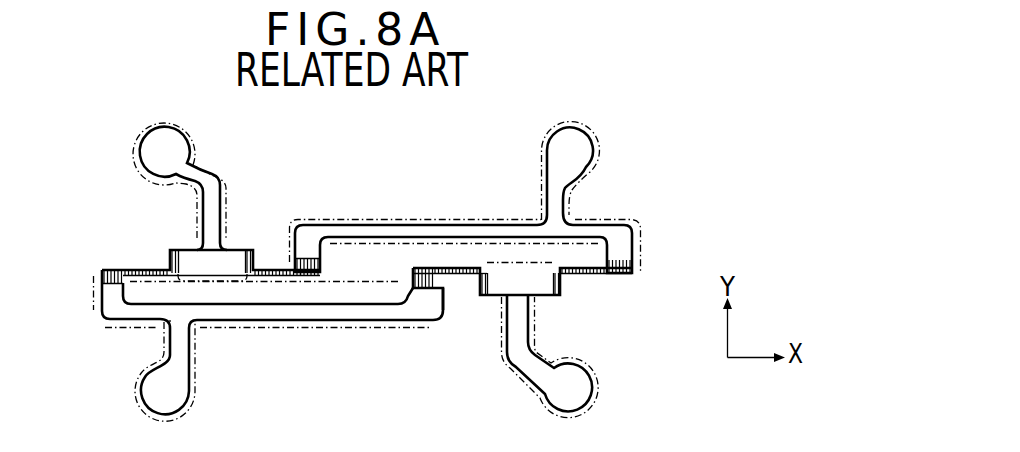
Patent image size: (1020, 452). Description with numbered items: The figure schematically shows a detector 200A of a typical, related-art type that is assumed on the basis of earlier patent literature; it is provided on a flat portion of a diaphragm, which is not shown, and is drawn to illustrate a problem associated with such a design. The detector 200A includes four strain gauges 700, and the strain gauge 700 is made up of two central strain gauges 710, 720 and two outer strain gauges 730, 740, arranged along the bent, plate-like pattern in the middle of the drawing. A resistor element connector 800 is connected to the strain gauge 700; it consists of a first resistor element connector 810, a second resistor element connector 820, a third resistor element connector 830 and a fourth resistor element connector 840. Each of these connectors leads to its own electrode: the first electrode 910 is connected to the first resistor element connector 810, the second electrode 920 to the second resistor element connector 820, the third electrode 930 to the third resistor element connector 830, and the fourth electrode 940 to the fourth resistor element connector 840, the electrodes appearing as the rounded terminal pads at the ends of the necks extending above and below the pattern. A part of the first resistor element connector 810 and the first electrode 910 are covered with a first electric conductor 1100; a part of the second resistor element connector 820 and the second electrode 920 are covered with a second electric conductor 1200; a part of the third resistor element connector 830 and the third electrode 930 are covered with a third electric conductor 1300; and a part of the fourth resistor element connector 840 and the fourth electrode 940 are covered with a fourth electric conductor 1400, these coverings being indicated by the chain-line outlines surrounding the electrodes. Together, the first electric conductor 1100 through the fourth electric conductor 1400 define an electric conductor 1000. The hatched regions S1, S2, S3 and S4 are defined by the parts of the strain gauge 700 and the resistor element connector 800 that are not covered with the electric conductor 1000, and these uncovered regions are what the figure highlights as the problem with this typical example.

The detector 200A is at (455, 170).
The strain gauge 700 is at (247, 234).
The central strain gauge 710 is at (276, 270).
The central strain gauge 720 is at (448, 308).
The outer strain gauge 730 is at (148, 270).
The outer strain gauge 740 is at (570, 285).
The resistor element connector 800 is at (374, 224).
The first resistor element connector 810 is at (210, 258).
The second resistor element connector 820 is at (300, 321).
The third resistor element connector 830 is at (545, 292).
The fourth resistor element connector 840 is at (500, 236).
The first electrode 910 is at (170, 146).
The second electrode 920 is at (175, 392).
The third electrode 930 is at (530, 380).
The fourth electrode 940 is at (585, 153).
The electric conductor 1000 is at (322, 214).
The first electric conductor 1100 is at (158, 128).
The second electric conductor 1200 is at (143, 410).
The third electric conductor 1300 is at (594, 395).
The fourth electric conductor 1400 is at (548, 128).
The region S1 is at (100, 275).
The region S2 is at (488, 290).
The region S3 is at (640, 268).
The region S4 is at (310, 276).